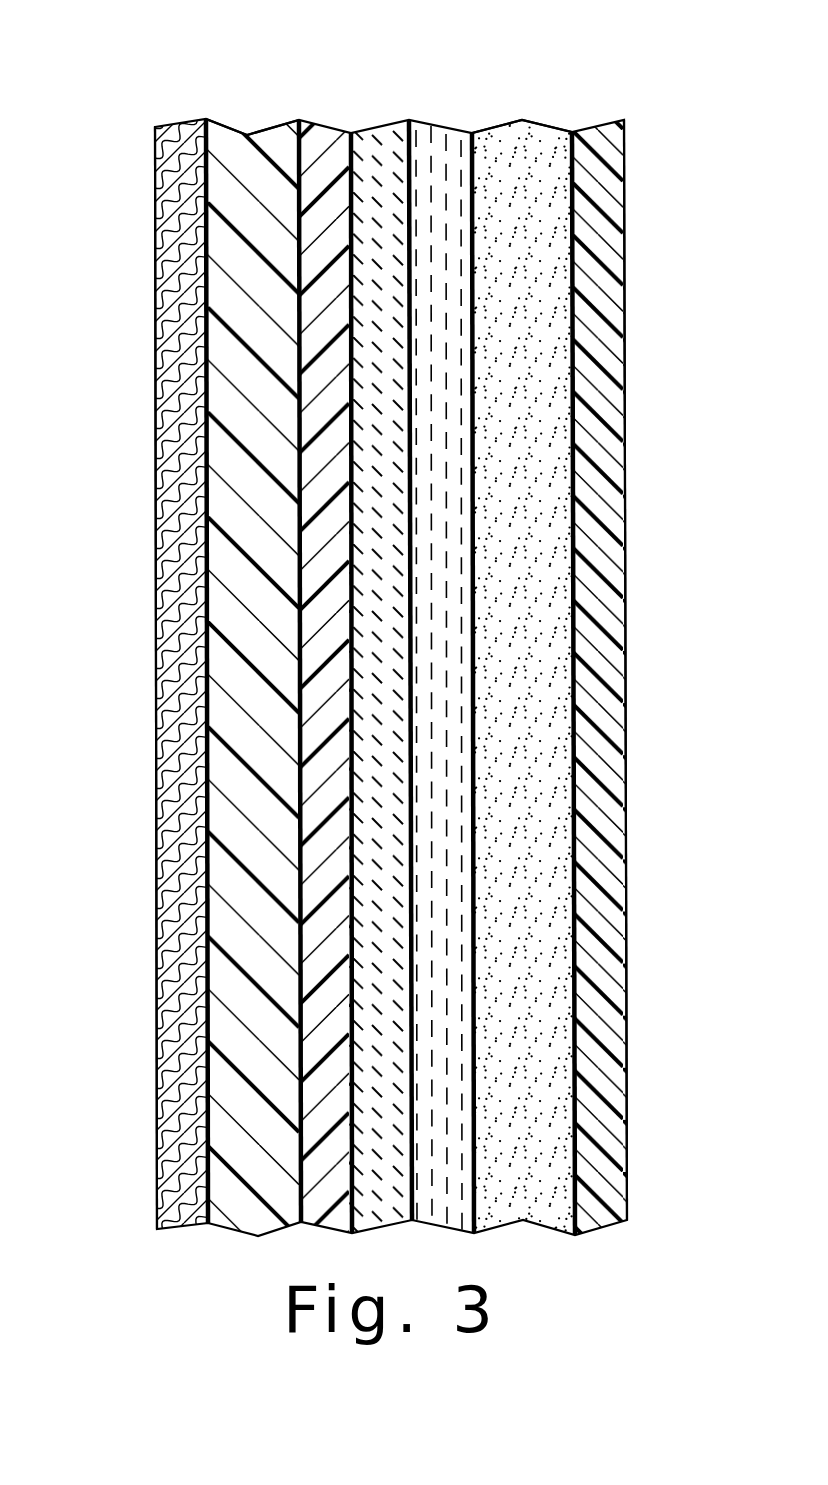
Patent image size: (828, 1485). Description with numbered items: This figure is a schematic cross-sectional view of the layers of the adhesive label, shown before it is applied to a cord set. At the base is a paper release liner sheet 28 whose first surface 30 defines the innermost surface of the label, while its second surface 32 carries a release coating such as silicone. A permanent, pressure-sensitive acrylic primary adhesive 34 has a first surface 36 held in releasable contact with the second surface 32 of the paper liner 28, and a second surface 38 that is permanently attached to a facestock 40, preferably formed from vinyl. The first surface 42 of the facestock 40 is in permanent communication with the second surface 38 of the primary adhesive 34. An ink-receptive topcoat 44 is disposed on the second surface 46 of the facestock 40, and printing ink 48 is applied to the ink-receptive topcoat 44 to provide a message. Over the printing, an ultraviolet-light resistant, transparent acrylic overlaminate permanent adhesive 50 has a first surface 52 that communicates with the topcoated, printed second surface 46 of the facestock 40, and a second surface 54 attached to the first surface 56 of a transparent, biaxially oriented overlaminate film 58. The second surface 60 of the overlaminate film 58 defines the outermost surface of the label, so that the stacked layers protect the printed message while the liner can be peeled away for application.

The paper release liner sheet 28 is at (170, 106).
The first surface 30 is at (153, 146).
The second surface 32 is at (153, 203).
The primary adhesive 34 is at (254, 112).
The first surface 36 is at (246, 134).
The second surface 38 is at (287, 152).
The facestock 40 is at (325, 106).
The first surface 42 is at (318, 138).
The ink-receptive topcoat 44 is at (377, 108).
The second surface 46 is at (337, 152).
The printing ink 48 is at (437, 108).
The overlaminate permanent adhesive 50 is at (520, 105).
The first surface 52 is at (492, 146).
The second surface 54 is at (558, 142).
The first surface 56 is at (592, 155).
The overlaminate film 58 is at (605, 107).
The second surface 60 is at (623, 150).